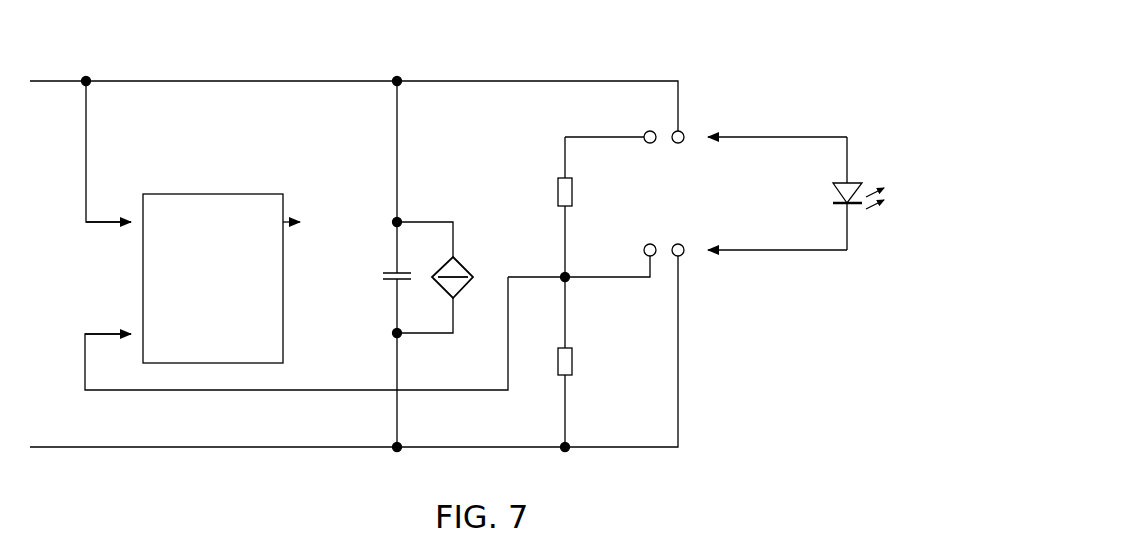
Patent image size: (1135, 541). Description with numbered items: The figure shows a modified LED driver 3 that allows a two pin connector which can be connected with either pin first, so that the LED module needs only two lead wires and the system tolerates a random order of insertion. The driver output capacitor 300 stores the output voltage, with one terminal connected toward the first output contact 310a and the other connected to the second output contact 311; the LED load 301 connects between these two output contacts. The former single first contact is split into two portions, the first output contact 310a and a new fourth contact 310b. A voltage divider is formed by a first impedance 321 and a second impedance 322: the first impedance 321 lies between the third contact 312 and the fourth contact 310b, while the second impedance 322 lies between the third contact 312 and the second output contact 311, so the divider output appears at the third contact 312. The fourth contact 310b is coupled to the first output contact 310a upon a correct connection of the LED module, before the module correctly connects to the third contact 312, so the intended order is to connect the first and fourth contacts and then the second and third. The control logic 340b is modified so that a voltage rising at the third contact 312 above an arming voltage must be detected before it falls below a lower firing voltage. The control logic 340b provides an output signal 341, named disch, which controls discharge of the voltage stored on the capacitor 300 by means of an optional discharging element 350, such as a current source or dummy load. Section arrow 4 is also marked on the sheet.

The LED driver 3 is at (751, 34).
The section line 4 is at (760, 537).
The driver output capacitor 300 is at (378, 270).
The LED load 301 is at (853, 172).
The first output contact 310a is at (684, 128).
The fourth contact 310b is at (650, 128).
The second output contact 311 is at (686, 247).
The third contact 312 is at (646, 243).
The first impedance 321 is at (556, 192).
The second impedance 322 is at (575, 362).
The control logic 340b is at (296, 280).
The output signal 341 is at (313, 207).
The discharging element 350 is at (482, 278).